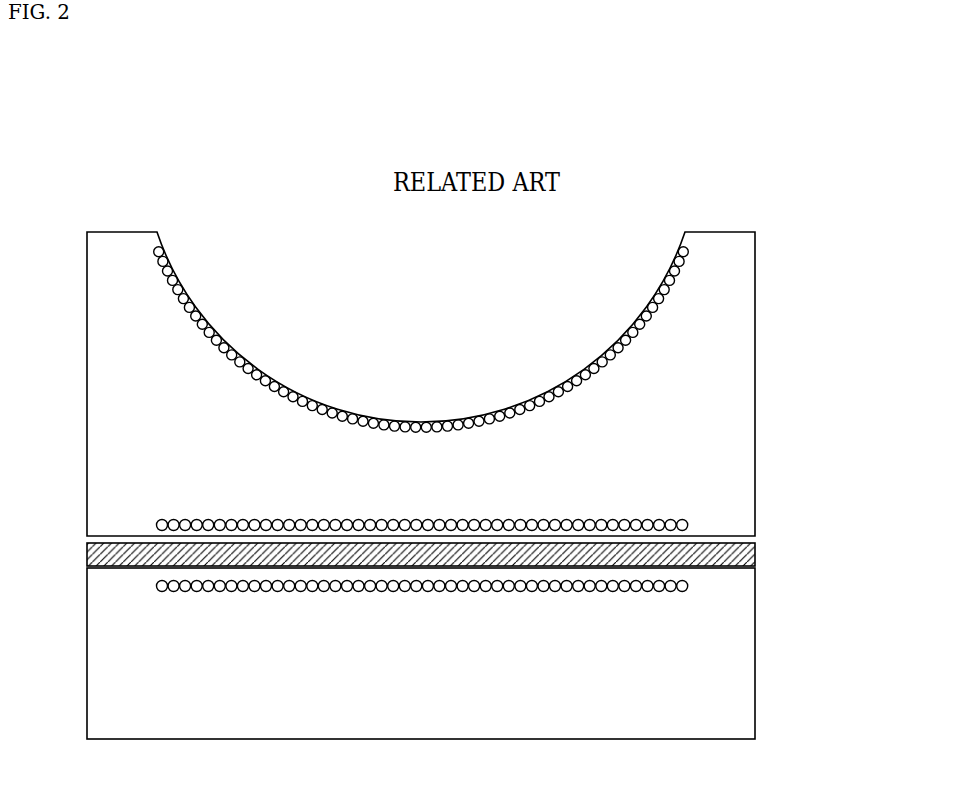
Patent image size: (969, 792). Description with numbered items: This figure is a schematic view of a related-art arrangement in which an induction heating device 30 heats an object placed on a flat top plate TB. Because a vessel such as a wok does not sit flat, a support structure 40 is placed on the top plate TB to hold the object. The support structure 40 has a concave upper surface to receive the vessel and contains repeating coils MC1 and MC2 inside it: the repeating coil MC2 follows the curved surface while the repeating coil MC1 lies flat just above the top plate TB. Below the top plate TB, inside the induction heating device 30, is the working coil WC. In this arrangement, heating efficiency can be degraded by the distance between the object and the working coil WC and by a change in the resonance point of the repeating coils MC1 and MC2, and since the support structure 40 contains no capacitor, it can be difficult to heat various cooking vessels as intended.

The support structure 40 is at (732, 320).
The repeating coil MC2 is at (628, 342).
The repeating coil MC1 is at (687, 524).
The top plate TB is at (745, 557).
The working coil WC is at (687, 586).
The induction heating device 30 is at (732, 661).